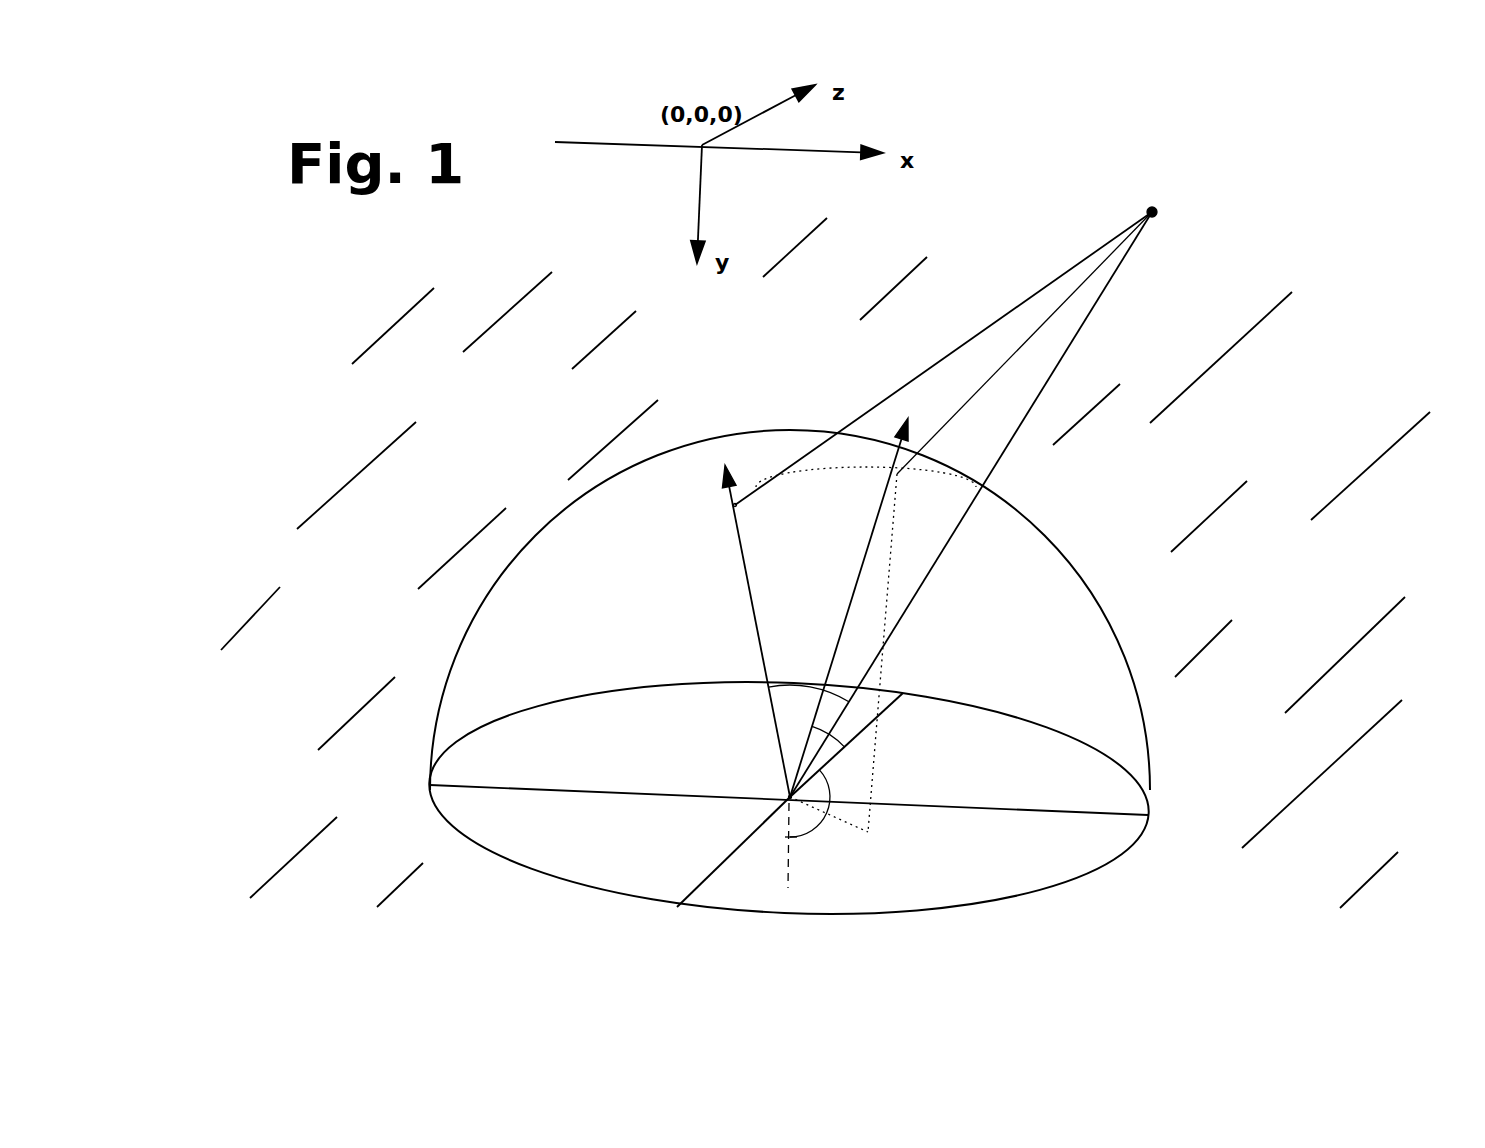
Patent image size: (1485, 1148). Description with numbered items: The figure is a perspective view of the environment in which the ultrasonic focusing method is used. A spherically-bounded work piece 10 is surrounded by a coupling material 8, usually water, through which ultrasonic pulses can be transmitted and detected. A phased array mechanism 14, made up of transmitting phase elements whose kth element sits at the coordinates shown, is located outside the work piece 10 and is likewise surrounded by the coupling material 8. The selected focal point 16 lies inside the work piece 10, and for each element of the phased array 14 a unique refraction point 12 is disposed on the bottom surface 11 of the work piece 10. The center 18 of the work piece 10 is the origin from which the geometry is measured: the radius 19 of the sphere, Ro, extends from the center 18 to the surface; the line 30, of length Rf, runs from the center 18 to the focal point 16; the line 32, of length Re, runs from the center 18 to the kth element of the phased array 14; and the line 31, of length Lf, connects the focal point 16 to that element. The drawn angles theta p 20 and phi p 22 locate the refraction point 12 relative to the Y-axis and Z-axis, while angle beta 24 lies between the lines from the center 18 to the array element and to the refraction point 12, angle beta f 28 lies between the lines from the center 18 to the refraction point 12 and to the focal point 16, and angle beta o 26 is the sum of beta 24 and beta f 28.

The coupling material 8 is at (1277, 772).
The spherically-bounded work piece 10 is at (1139, 611).
The bottom surface 11 is at (469, 628).
The refraction point 12 is at (937, 486).
The phased array mechanism 14 is at (1054, 311).
The selected focal point 16 is at (708, 534).
The center of the work piece 18 is at (749, 814).
The radius of the sphere 19 is at (754, 894).
The azimuth angle theta p 20 is at (846, 856).
The angle phi p 22 is at (857, 754).
The angle beta 24 is at (867, 611).
The angle beta o 26 is at (763, 735).
The angle beta f 28 is at (790, 614).
The line Rf 30 is at (721, 588).
The line Lf 31 is at (898, 352).
The line Re 32 is at (979, 568).